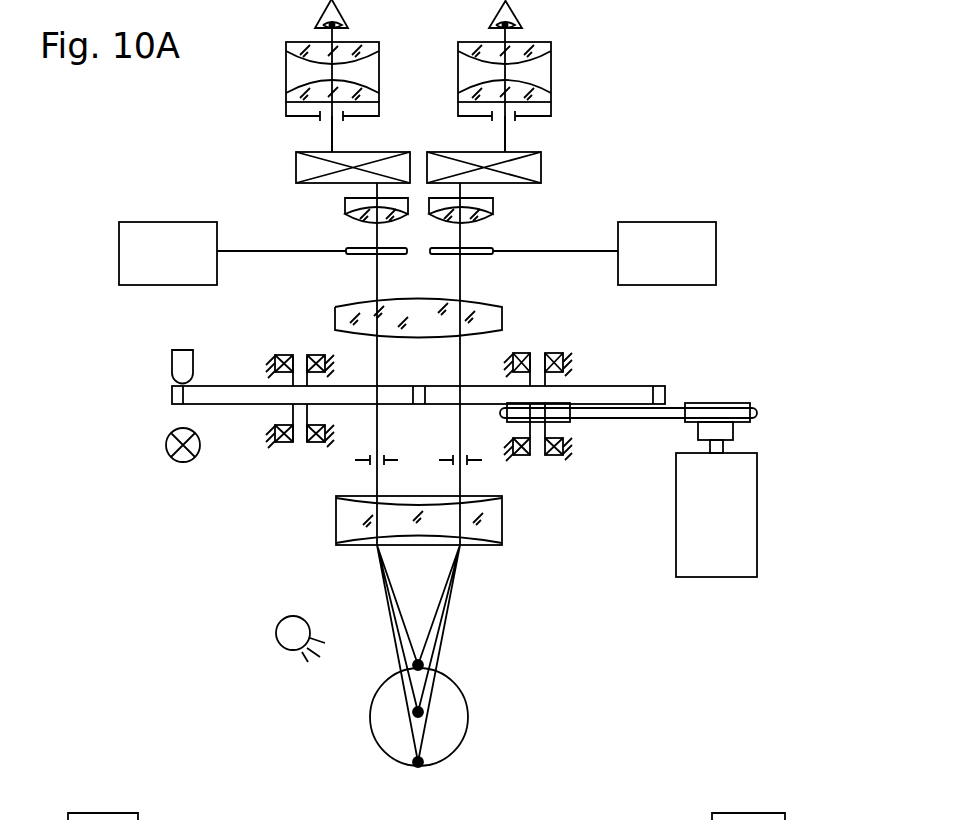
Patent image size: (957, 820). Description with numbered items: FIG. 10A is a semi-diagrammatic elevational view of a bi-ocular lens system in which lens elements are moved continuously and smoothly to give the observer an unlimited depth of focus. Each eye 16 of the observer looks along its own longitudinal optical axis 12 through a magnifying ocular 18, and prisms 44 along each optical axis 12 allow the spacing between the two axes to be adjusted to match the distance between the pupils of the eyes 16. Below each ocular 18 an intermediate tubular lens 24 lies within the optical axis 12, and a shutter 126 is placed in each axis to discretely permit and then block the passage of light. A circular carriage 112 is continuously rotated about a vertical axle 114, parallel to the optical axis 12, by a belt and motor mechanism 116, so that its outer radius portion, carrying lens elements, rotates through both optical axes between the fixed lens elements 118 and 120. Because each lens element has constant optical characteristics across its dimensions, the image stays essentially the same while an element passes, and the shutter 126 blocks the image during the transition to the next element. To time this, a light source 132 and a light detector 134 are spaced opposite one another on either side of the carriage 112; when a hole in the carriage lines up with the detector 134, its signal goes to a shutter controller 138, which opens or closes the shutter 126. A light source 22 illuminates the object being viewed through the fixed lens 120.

The eye of an observer 16 is at (325, 2).
The ocular 18 is at (286, 68).
The longitudinal optical axis 12 is at (332, 133).
The prisms 44 is at (296, 171).
The intermediate tubular lens 24 is at (345, 209).
The shutter 126 is at (363, 256).
The shutter controller 138 is at (149, 245).
The fixed lens element 118 is at (497, 313).
The circular carriage 112 is at (637, 390).
The vertical axle 114 is at (298, 414).
The belt and motor mechanism 116 is at (743, 495).
The light detector 134 is at (172, 363).
The light source 132 is at (166, 447).
The fixed lens element 120 is at (502, 527).
The light source 22 is at (282, 617).